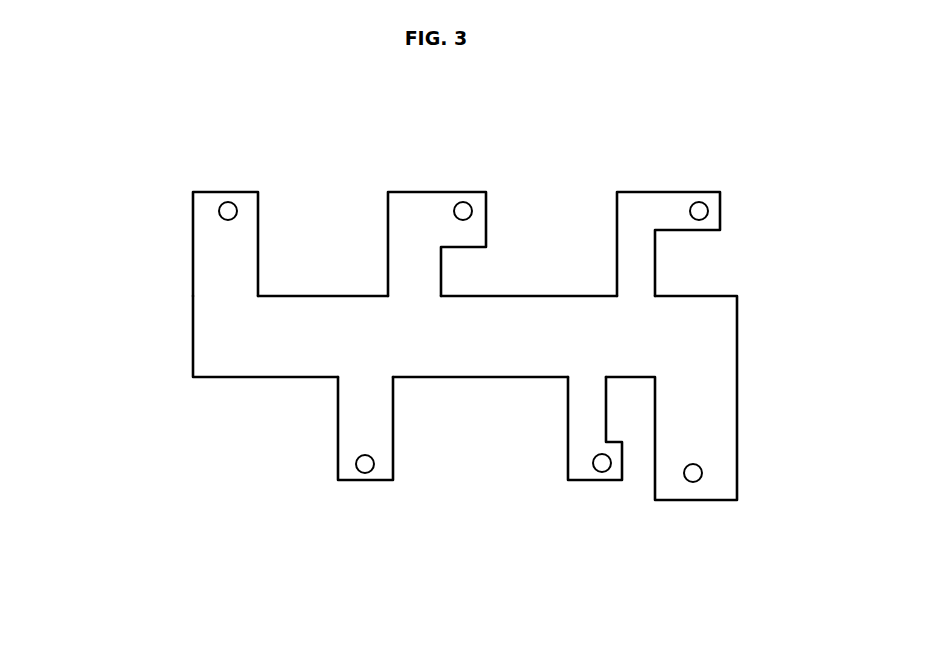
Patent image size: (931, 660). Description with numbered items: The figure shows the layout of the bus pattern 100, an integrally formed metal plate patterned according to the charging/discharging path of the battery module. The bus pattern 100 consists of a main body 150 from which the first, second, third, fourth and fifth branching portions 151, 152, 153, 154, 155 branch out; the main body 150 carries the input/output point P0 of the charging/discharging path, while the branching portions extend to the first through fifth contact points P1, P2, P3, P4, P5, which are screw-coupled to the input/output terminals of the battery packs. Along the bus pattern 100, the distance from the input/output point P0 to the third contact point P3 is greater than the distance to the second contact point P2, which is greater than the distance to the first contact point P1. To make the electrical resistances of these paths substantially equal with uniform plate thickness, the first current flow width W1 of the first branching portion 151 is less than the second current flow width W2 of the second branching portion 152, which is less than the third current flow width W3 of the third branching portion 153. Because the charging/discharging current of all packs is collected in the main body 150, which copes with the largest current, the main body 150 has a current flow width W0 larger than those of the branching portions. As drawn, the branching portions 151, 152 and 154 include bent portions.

The bus pattern 100 is at (160, 333).
The main body 150 is at (725, 345).
The first branching portion 151 is at (626, 202).
The second branching portion 152 is at (396, 202).
The third branching portion 153 is at (203, 203).
The fourth branching portion 154 is at (573, 428).
The fifth branching portion 155 is at (343, 428).
The input/output point P0 is at (694, 482).
The first contact point P1 is at (701, 202).
The second contact point P2 is at (466, 202).
The third contact point P3 is at (229, 202).
The fourth contact point P4 is at (603, 472).
The fifth contact point P5 is at (366, 473).
The current flow width of the main body W0 is at (735, 410).
The first current flow width W1 is at (653, 272).
The second current flow width W2 is at (439, 272).
The third current flow width W3 is at (256, 272).